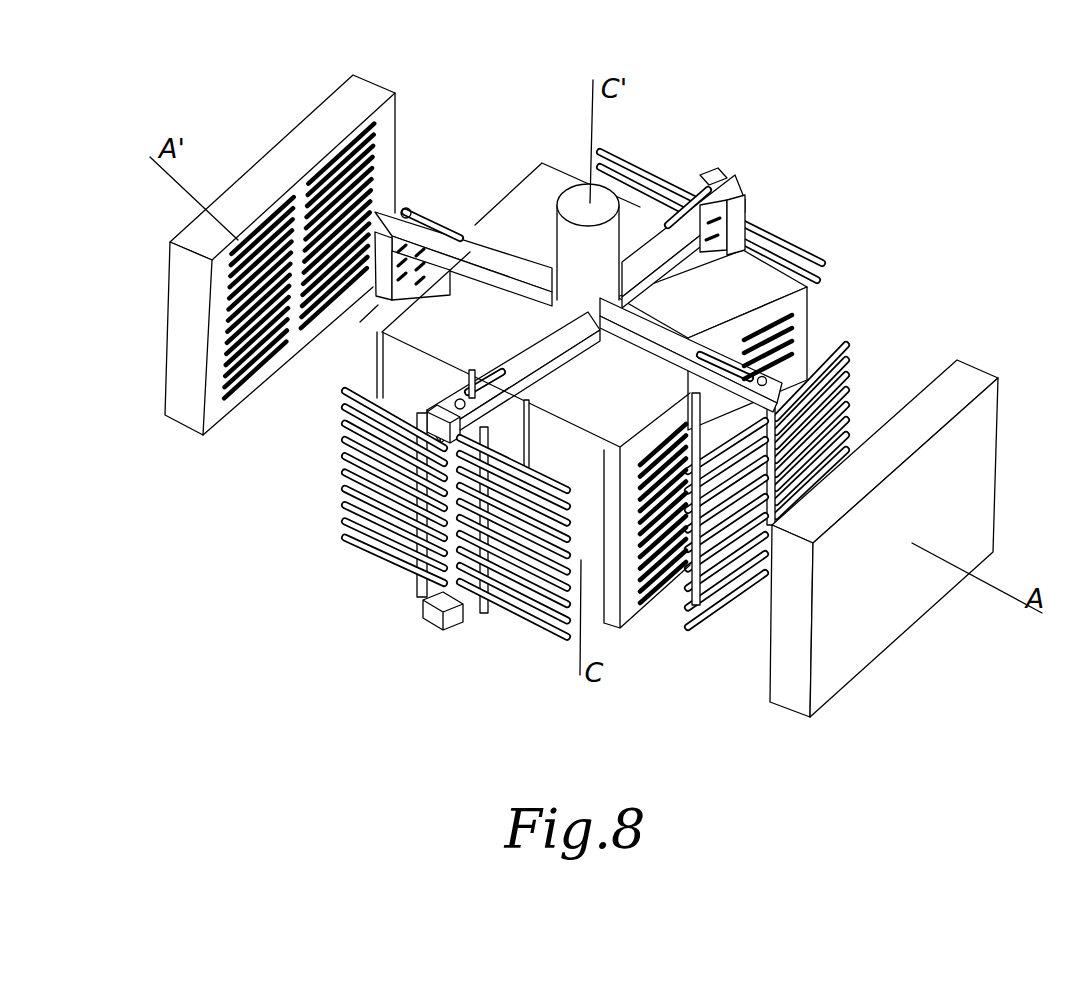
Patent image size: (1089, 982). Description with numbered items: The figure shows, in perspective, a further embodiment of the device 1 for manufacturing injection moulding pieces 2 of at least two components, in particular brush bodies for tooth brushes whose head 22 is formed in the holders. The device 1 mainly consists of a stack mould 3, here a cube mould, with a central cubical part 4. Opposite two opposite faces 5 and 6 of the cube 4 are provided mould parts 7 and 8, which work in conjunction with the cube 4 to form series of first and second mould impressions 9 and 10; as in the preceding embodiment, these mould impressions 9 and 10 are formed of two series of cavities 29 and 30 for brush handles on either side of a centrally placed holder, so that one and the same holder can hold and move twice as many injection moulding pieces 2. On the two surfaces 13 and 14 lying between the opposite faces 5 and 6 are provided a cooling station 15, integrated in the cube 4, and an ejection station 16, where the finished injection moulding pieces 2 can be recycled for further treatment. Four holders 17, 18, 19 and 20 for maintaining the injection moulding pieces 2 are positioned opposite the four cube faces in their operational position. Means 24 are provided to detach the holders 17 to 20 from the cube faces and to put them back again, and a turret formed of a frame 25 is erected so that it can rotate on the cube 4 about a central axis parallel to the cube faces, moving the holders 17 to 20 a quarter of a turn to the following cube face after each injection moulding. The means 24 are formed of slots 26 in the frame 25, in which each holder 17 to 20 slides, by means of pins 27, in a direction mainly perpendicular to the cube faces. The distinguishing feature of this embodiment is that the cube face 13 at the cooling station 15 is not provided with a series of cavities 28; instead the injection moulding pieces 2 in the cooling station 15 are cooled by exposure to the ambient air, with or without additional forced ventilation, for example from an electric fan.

The device 1 is at (1000, 222).
The injection moulding pieces 2 is at (526, 640).
The stack mould 3 is at (668, 733).
The central cubical part 4 is at (750, 290).
The face 5 is at (508, 195).
The face 6 is at (795, 313).
The mould part 7 is at (367, 93).
The mould part 8 is at (950, 397).
The first mould impressions 9 is at (277, 382).
The second mould impressions 10 is at (665, 608).
The surface 13 is at (560, 172).
The surface 14 is at (583, 560).
The cooling station 15 is at (835, 211).
The ejection station 16 is at (388, 586).
The holder 17 is at (388, 242).
The holder 18 is at (738, 205).
The holder 19 is at (843, 380).
The holder 20 is at (529, 433).
The head 22 is at (470, 630).
The means to detach the holders 24 is at (448, 203).
The turret frame 25 is at (530, 352).
The slots 26 is at (685, 178).
The pins 27 is at (708, 170).
The cavities 28 is at (373, 310).
The cavities 29 is at (343, 150).
The cavities 30 is at (763, 338).